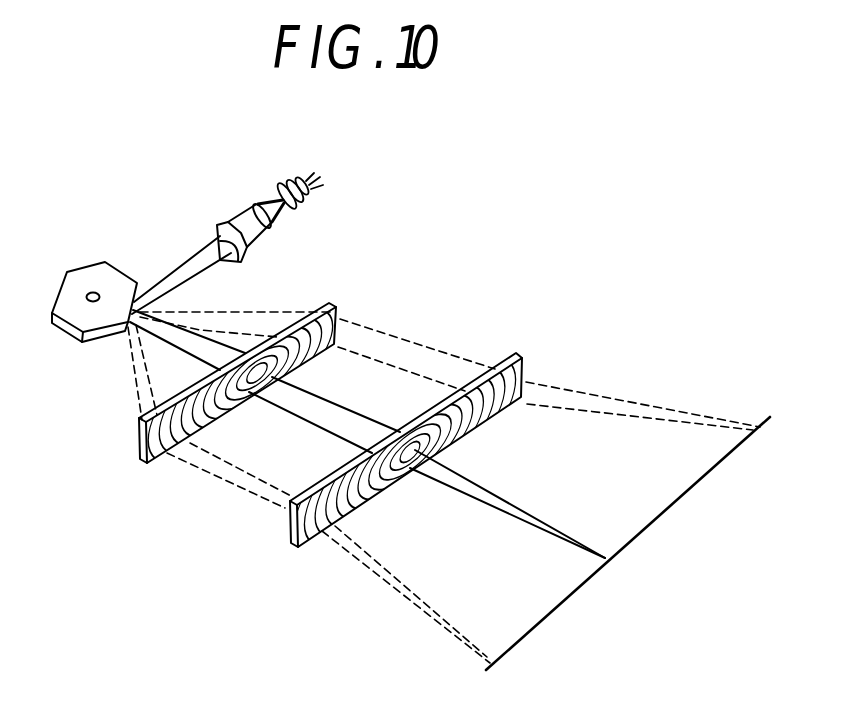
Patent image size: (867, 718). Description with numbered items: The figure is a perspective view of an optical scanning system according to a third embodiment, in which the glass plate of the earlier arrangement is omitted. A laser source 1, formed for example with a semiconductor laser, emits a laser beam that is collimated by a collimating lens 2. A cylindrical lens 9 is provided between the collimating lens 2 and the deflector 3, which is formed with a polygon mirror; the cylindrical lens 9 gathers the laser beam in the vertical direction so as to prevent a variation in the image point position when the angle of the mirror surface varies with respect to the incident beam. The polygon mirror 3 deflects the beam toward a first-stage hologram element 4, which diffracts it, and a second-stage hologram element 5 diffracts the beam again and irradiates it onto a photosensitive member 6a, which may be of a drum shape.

The laser source 1 is at (307, 201).
The collimating lens 2 is at (273, 221).
The deflector 3 is at (91, 262).
The first-stage hologram element 4 is at (339, 309).
The second-stage hologram element 5 is at (527, 360).
The photosensitive member 6a is at (668, 508).
The cylindrical lens 9 is at (218, 226).